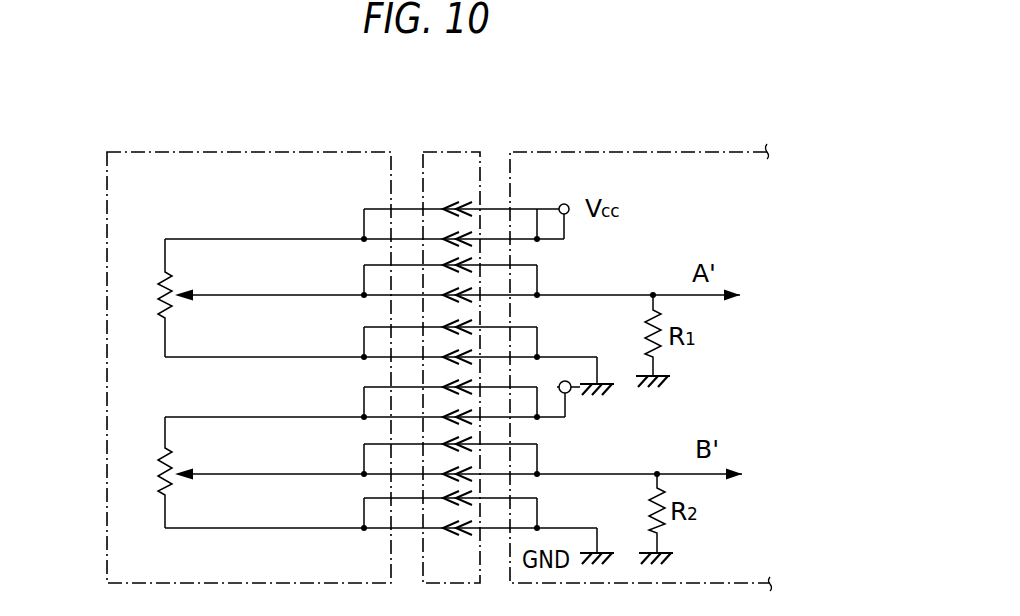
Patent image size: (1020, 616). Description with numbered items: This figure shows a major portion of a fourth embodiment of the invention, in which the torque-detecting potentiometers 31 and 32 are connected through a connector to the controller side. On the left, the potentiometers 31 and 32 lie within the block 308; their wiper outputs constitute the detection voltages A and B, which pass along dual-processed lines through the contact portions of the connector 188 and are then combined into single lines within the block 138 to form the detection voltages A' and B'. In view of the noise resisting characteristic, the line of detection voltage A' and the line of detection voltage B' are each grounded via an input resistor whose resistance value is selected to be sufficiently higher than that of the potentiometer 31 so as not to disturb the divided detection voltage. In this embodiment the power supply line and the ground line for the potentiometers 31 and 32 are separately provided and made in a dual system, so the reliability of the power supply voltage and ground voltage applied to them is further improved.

The operation panel / control unit 308 is at (259, 151).
The connector 188 is at (456, 151).
The main body circuit board 138 is at (593, 151).
The potentiometer 31 is at (160, 281).
The potentiometer 32 is at (162, 457).